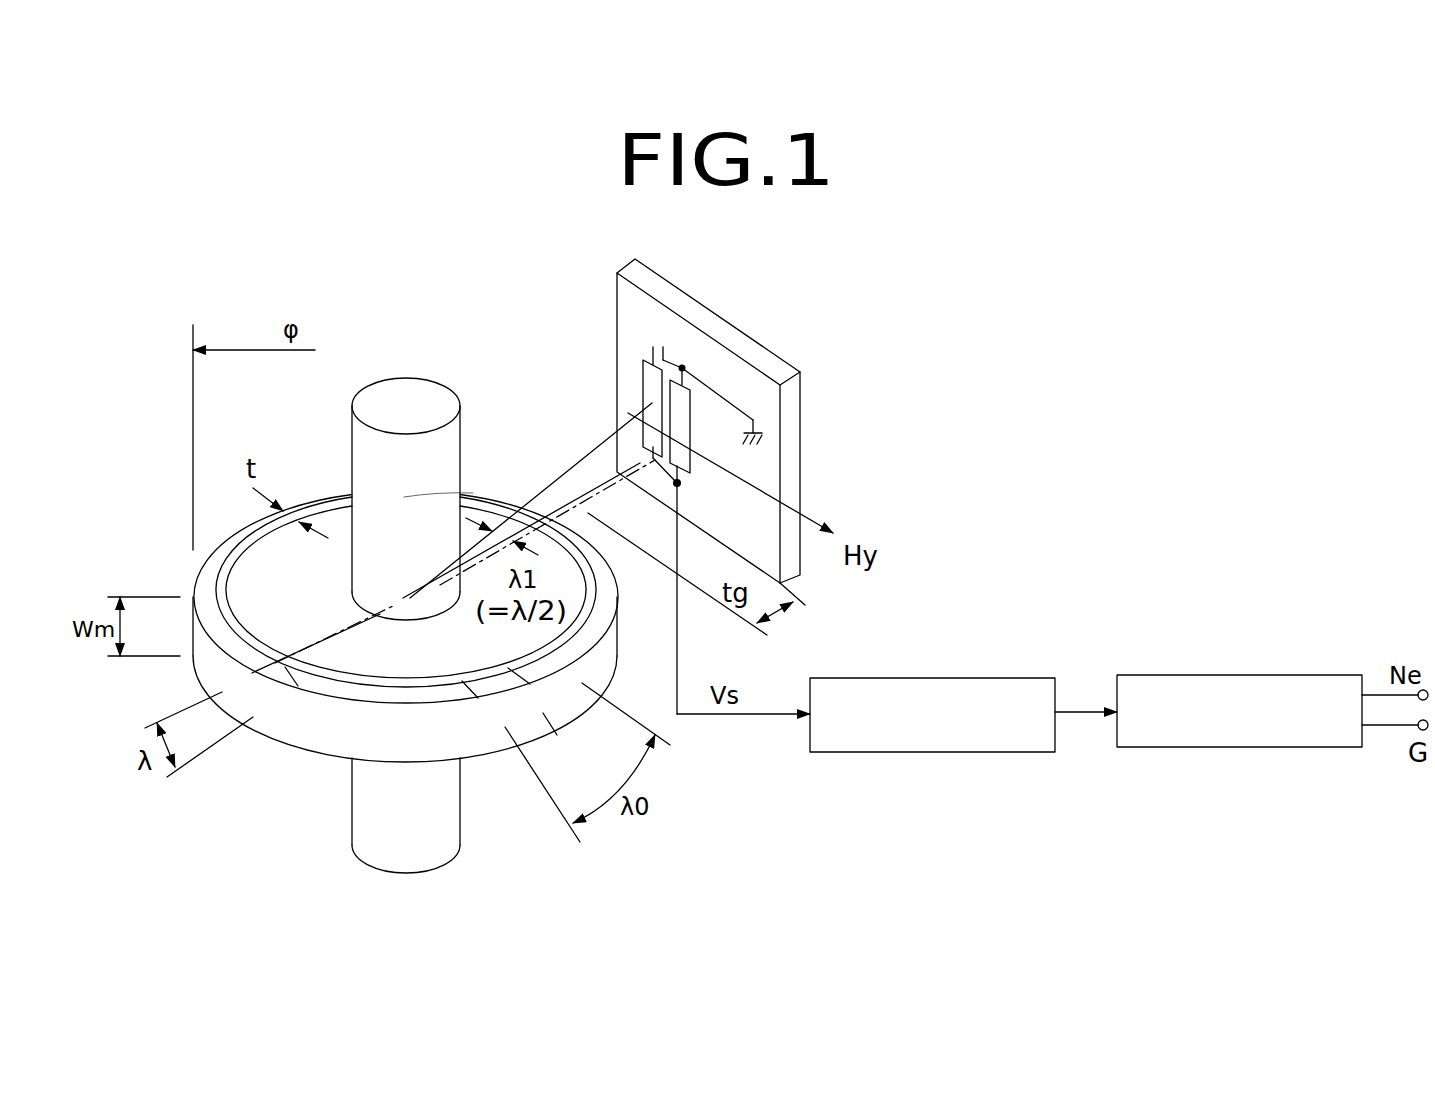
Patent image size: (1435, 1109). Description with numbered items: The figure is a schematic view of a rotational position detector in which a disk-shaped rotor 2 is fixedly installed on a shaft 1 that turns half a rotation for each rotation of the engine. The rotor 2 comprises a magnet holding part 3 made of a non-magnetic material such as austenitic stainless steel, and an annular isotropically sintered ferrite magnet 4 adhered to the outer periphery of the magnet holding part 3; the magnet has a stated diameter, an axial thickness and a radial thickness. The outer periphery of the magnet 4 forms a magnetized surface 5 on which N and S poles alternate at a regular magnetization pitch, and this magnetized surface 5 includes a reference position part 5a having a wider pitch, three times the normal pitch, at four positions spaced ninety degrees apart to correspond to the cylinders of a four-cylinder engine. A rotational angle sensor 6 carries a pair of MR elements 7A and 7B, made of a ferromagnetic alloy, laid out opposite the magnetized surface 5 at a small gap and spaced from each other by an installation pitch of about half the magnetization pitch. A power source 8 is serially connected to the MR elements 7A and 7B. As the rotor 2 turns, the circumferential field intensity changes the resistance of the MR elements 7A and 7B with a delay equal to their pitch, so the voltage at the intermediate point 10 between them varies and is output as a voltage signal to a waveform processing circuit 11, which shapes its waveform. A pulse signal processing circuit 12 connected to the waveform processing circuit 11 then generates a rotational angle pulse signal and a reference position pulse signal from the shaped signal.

The shaft 1 is at (437, 388).
The rotor 2 is at (318, 492).
The magnet holding part 3 is at (473, 493).
The magnet 4 is at (203, 575).
The magnetized surface 5 is at (323, 750).
The reference position part 5a is at (548, 715).
The rotational angle sensor 6 is at (753, 338).
The MR element 7A is at (642, 373).
The MR element 7B is at (717, 472).
The power source 8 is at (653, 347).
The intermediate point 10 is at (677, 483).
The waveform processing circuit 11 is at (973, 678).
The pulse signal processing circuit 12 is at (1270, 675).